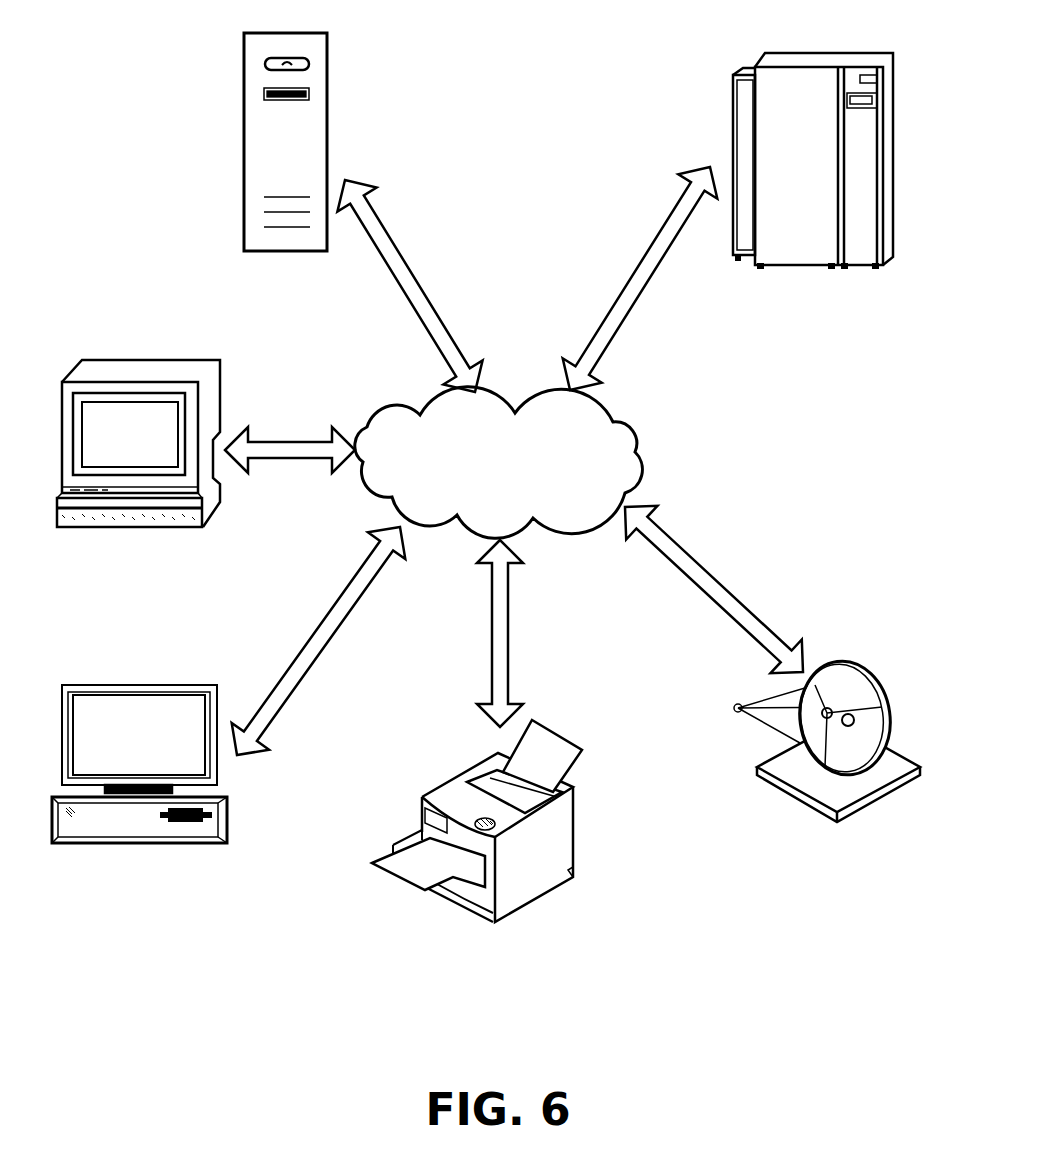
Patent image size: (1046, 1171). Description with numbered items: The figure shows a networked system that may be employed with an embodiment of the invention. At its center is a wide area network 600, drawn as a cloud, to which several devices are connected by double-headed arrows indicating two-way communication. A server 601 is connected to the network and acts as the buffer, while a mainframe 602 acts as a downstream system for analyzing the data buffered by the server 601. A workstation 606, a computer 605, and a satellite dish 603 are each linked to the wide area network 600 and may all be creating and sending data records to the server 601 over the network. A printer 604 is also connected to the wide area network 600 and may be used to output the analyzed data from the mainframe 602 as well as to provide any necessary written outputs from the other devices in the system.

The wide area network 600 is at (499, 462).
The server 601 is at (285, 147).
The mainframe 602 is at (813, 160).
The satellite dish 603 is at (827, 743).
The printer 604 is at (477, 840).
The computer 605 is at (139, 771).
The workstation 606 is at (138, 454).